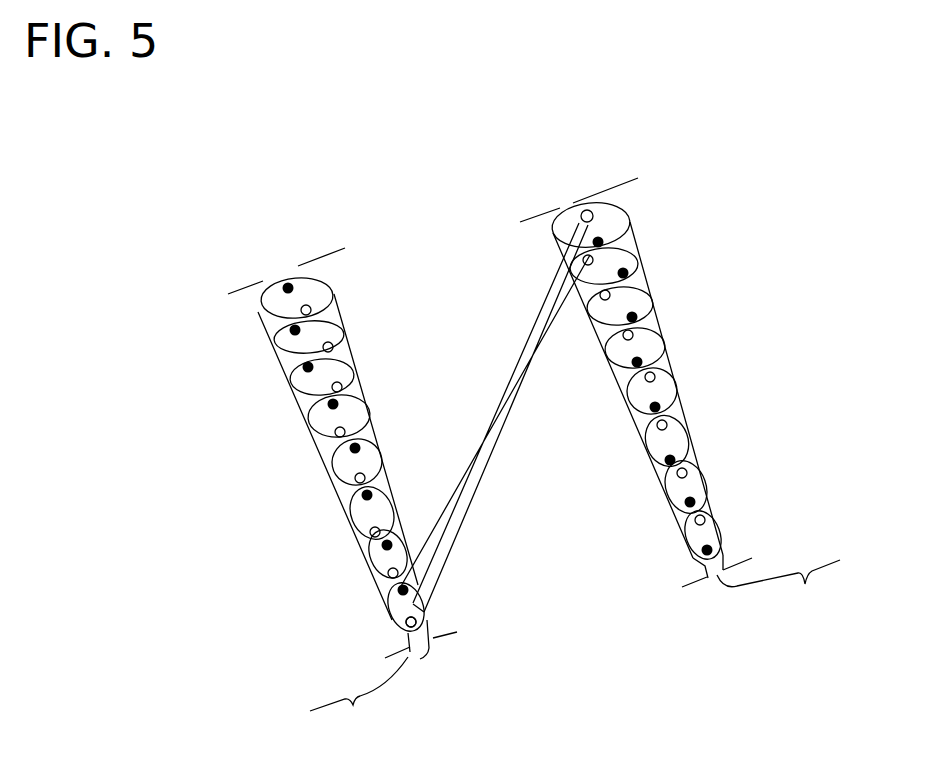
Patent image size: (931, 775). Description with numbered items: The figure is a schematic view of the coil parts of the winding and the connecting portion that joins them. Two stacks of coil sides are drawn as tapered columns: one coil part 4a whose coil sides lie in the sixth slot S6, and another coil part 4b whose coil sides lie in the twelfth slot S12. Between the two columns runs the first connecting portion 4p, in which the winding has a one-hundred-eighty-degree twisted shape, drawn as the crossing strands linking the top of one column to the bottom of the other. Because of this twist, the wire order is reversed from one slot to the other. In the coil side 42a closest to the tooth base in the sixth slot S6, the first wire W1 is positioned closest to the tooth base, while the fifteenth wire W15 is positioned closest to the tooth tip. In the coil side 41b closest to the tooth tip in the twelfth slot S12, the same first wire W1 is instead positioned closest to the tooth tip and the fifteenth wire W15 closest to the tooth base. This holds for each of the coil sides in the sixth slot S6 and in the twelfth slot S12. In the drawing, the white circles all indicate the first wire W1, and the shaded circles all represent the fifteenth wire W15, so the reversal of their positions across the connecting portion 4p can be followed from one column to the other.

The coil part 4a is at (761, 589).
The coil part 4b is at (383, 681).
The first connecting portion 4p is at (480, 408).
The coil side 41b is at (392, 616).
The coil side 42a is at (608, 215).
The sixth slot S6 is at (640, 243).
The twelfth slot S12 is at (268, 343).
The first wire W1 is at (585, 210).
The fifteenth wire W15 is at (392, 613).